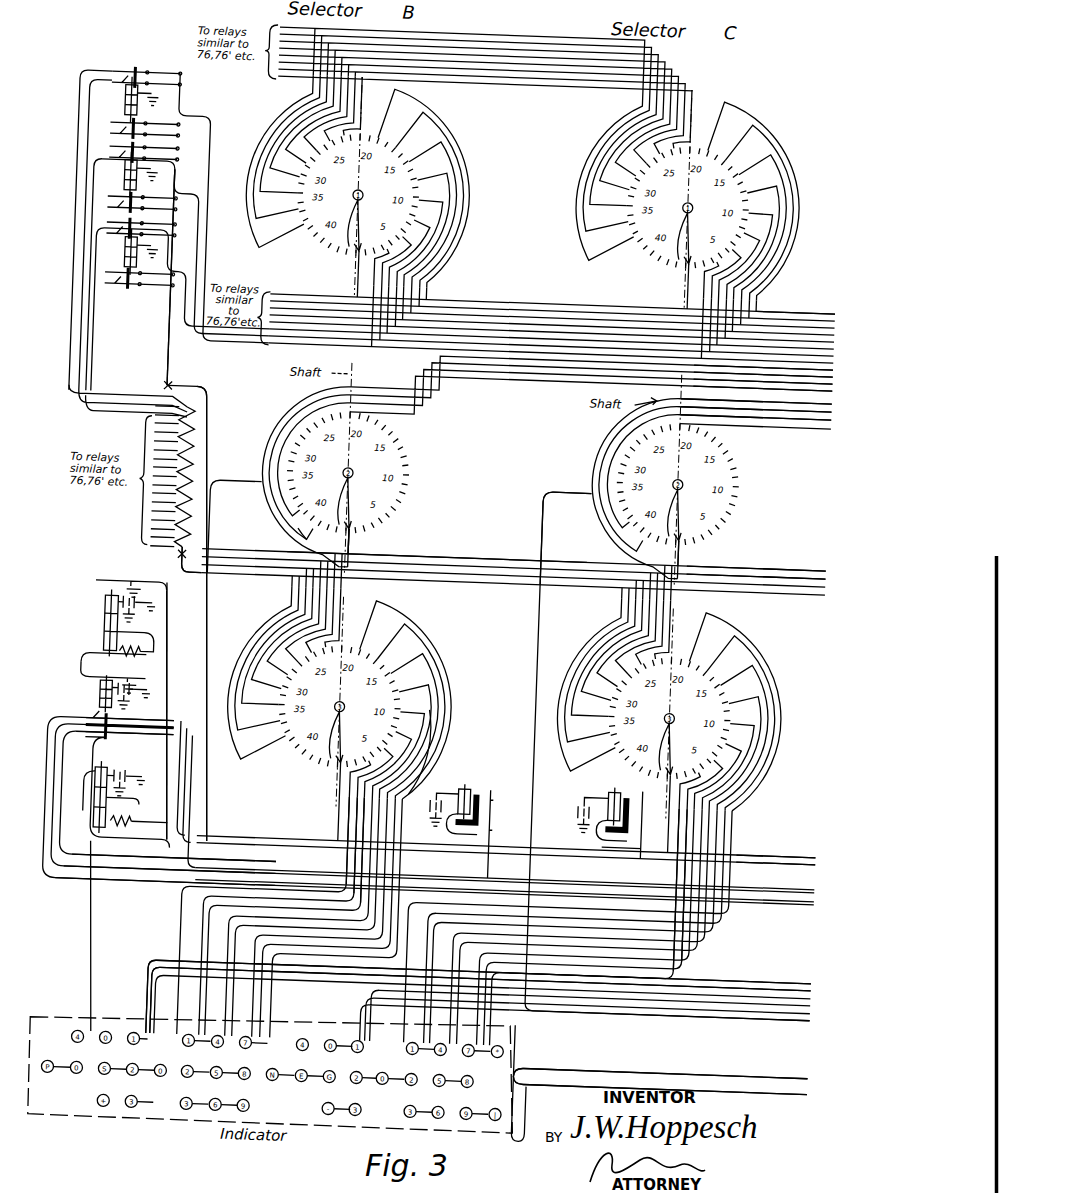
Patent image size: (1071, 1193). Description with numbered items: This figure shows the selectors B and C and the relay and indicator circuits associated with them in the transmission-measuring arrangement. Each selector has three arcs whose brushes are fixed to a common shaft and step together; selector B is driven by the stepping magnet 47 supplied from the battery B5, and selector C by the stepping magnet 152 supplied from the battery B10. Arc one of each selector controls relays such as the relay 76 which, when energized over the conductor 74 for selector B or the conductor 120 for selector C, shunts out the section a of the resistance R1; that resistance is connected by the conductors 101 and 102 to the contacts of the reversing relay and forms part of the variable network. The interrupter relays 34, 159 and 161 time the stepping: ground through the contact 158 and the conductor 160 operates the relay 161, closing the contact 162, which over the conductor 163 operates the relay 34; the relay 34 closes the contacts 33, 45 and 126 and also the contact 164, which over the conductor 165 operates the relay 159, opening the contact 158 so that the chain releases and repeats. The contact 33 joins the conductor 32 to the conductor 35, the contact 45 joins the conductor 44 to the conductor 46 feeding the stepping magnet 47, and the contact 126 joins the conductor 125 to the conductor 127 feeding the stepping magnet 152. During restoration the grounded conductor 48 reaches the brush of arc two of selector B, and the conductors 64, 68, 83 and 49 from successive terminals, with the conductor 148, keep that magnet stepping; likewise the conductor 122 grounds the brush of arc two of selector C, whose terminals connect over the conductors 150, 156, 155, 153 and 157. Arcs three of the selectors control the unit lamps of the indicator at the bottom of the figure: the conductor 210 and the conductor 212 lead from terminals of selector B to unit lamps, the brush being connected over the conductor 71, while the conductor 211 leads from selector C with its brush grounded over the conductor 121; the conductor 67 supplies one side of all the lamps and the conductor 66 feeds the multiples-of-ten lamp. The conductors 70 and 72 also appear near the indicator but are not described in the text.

The relay 76 is at (120, 109).
The conductor 74 is at (358, 276).
The conductor 120 is at (810, 297).
The conductor 83 is at (770, 360).
The conductor 68 is at (760, 367).
The conductor 49 is at (786, 353).
The conductor 64 is at (792, 374).
The conductor 101 is at (180, 392).
The conductor 102 is at (192, 568).
The section of resistance R1 a is at (214, 400).
The resistance R1 is at (205, 473).
The conductor 150 is at (790, 403).
The conductor 153 is at (602, 476).
The conductor 156 is at (805, 387).
The conductor 155 is at (800, 395).
The conductor 148 is at (404, 554).
The conductor 48 is at (366, 553).
The conductor 157 is at (770, 554).
The conductor 122 is at (809, 562).
The contact 158 is at (110, 588).
The interrupter relay 159 is at (120, 628).
The conductor 165 is at (109, 661).
The contact 164 is at (105, 680).
The conductor 160 is at (185, 668).
The conductor 163 is at (225, 703).
The contact 33 is at (105, 727).
The interrupter relay 34 is at (118, 701).
The contact 45 is at (105, 729).
The contact 126 is at (113, 743).
The contact 162 is at (116, 790).
The interrupter relay 161 is at (80, 790).
The conductor 35 is at (158, 803).
The conductor 46 is at (157, 818).
The conductor 127 is at (164, 831).
The conductor 125 is at (86, 864).
The conductor 44 is at (80, 876).
The conductor 32 is at (80, 888).
The conductor 212 is at (466, 732).
The stepping magnet 47 is at (488, 785).
The battery B5 is at (427, 812).
The conductor 71 is at (371, 784).
The conductor 72 is at (268, 901).
The conductor 210 is at (335, 849).
The stepping magnet 152 is at (640, 783).
The battery B10 is at (572, 819).
The conductor 121 is at (701, 783).
The conductor 211 is at (667, 882).
The conductor 66 is at (176, 1000).
The conductor 70 is at (809, 967).
The conductor 67 is at (802, 1062).